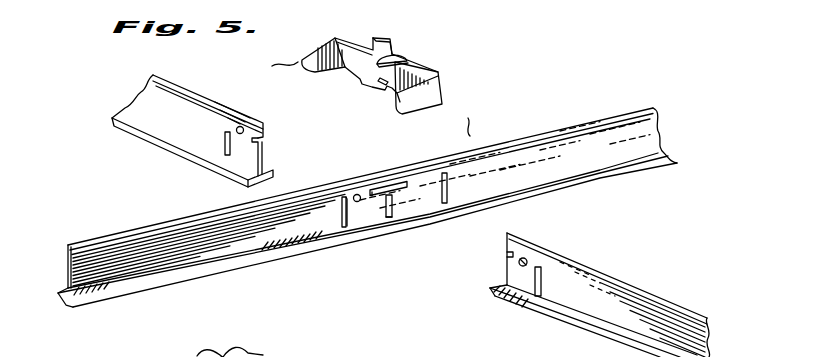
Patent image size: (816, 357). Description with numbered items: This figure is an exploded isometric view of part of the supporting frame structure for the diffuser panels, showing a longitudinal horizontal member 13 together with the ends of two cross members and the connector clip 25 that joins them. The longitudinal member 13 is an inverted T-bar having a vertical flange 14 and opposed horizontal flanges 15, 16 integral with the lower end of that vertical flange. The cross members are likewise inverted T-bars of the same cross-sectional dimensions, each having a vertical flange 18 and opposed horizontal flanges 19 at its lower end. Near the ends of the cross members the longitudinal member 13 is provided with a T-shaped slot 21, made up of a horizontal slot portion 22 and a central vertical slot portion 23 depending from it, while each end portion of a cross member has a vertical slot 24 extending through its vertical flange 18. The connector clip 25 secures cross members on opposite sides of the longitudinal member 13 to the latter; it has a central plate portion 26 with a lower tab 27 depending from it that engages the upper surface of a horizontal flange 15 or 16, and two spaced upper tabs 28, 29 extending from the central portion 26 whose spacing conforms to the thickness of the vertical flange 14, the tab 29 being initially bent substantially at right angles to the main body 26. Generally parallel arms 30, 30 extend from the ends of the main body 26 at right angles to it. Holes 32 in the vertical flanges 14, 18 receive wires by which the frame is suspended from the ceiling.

The longitudinal horizontal member 13 is at (674, 128).
The vertical flange 14 is at (163, 224).
The horizontal flange 15 is at (58, 293).
The horizontal flange 16 is at (264, 261).
The vertical flange 18 is at (215, 88).
The horizontal flanges 19 is at (162, 142).
The T-shaped slot 21 is at (384, 208).
The horizontal slot portion 22 is at (390, 182).
The central vertical slot portion 23 is at (396, 212).
The vertical slot 24 is at (224, 150).
The connector clip 25 is at (442, 72).
The central plate portion 26 is at (362, 44).
The lower tab 27 is at (364, 92).
The upper tab 28 is at (386, 40).
The upper tab 29 is at (402, 58).
The arm 30 is at (327, 52).
The hole 32 is at (244, 128).